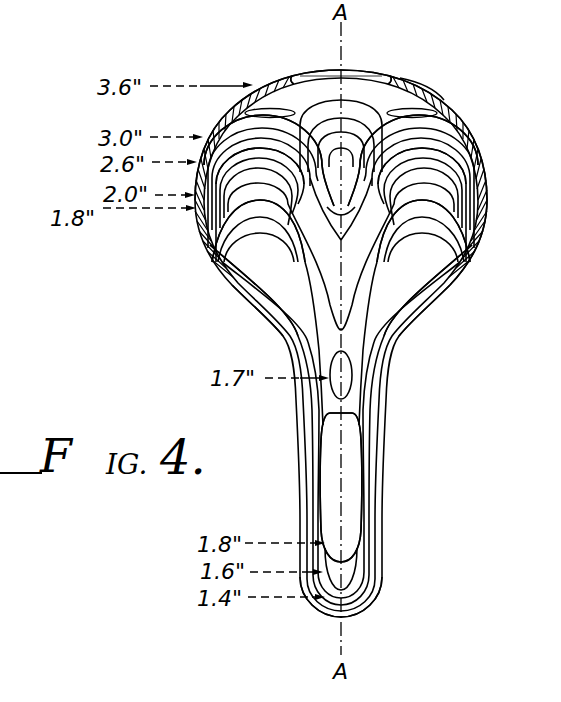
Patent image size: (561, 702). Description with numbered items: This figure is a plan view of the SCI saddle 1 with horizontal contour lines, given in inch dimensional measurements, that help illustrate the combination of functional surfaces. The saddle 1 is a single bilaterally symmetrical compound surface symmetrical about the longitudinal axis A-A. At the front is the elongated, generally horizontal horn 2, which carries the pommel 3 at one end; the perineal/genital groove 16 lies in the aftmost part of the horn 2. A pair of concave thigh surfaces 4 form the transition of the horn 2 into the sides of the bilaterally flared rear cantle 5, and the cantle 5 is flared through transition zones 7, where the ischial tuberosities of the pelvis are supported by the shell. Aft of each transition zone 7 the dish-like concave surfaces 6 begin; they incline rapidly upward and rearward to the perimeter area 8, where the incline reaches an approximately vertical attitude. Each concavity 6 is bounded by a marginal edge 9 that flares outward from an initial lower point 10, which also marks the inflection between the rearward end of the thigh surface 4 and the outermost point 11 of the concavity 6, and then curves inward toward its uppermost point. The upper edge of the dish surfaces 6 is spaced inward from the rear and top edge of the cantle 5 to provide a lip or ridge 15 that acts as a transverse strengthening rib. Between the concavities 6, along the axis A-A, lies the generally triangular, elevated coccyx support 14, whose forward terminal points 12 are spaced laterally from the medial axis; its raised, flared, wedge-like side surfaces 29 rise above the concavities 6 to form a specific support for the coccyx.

The SCI saddle 1 is at (452, 321).
The elongated horn 2 is at (382, 493).
The pommel 3 is at (344, 618).
The concave thigh surfaces 4 is at (275, 331).
The bilaterally flared rear cantle 5 is at (486, 140).
The concave surfaces 6 is at (243, 190).
The transition zone 7 is at (253, 220).
The perimeter area 8 is at (265, 108).
The marginal edge 9 is at (223, 120).
The initial lower point 10 is at (227, 270).
The outermost point 11 is at (487, 194).
The forward terminal point 12 is at (328, 202).
The coccyx support 14 is at (347, 100).
The lip or ridge 15 is at (417, 90).
The perineal/genital groove 16 is at (352, 378).
The side surfaces 29 is at (313, 147).